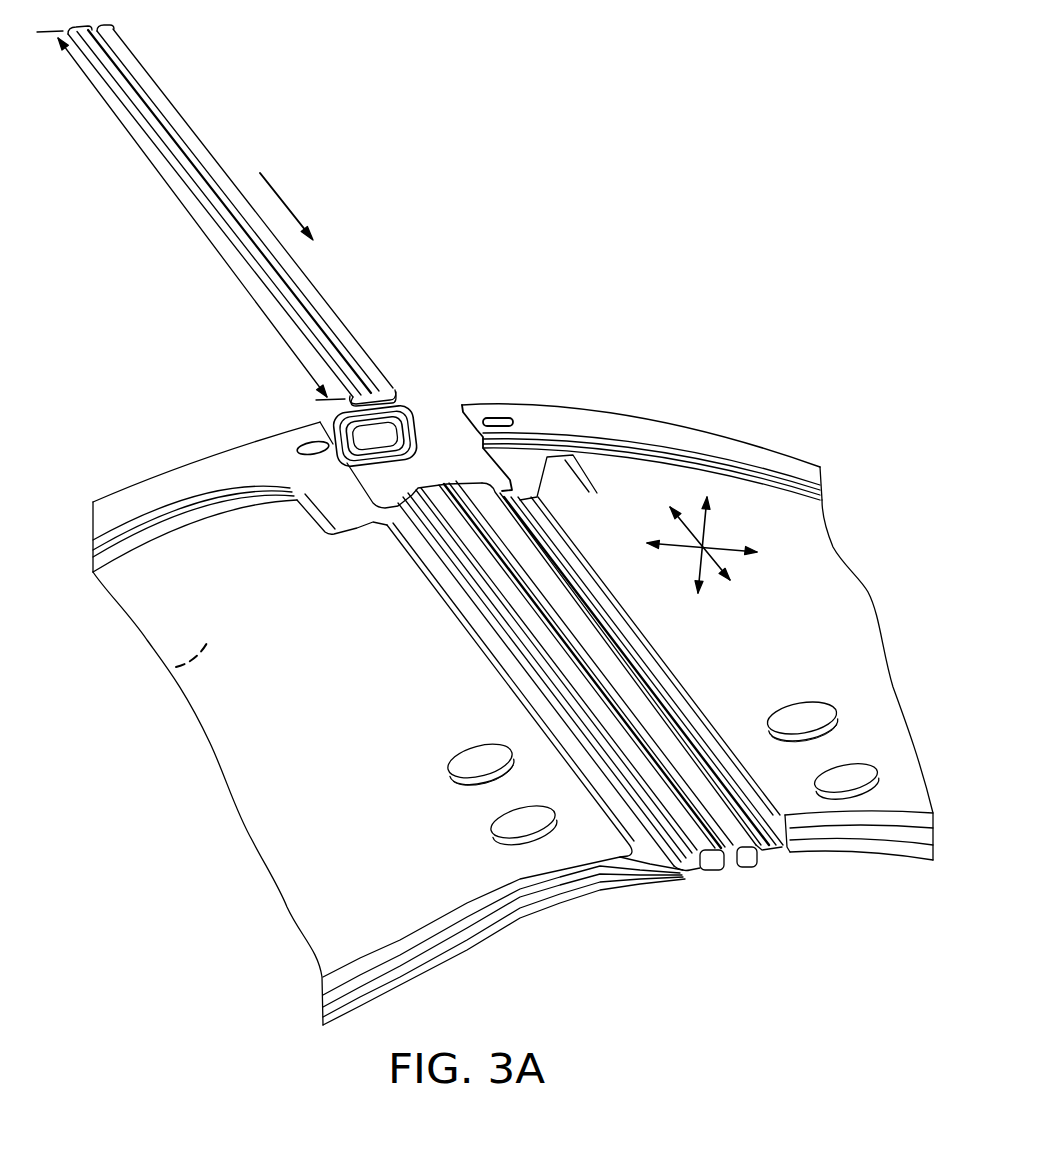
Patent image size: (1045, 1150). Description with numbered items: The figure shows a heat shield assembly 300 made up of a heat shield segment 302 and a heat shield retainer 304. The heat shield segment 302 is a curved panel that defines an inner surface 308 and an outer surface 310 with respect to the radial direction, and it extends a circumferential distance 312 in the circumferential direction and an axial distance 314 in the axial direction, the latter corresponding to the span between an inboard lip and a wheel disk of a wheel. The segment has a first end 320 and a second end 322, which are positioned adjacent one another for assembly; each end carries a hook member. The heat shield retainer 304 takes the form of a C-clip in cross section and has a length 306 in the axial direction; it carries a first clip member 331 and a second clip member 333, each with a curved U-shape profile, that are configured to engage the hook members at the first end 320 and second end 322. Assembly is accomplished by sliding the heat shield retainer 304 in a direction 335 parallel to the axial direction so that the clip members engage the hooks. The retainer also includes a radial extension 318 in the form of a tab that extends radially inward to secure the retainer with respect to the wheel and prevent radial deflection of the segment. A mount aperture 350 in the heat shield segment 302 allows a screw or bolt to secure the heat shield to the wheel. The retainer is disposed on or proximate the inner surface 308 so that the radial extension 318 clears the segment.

The heat shield assembly 300 is at (451, 87).
The heat shield segment 302 is at (132, 596).
The heat shield retainer 304 is at (213, 157).
The length 306 is at (190, 217).
The inner surface 308 is at (173, 667).
The outer surface 310 is at (237, 744).
The circumferential distance 312 is at (727, 553).
The axial distance 314 is at (683, 530).
The radial extension 318 is at (415, 418).
The first end 320 is at (691, 880).
The second end 322 is at (771, 870).
The first clip member 331 is at (313, 350).
The second clip member 333 is at (380, 363).
The direction 335 is at (283, 200).
The mount aperture 350 is at (503, 418).